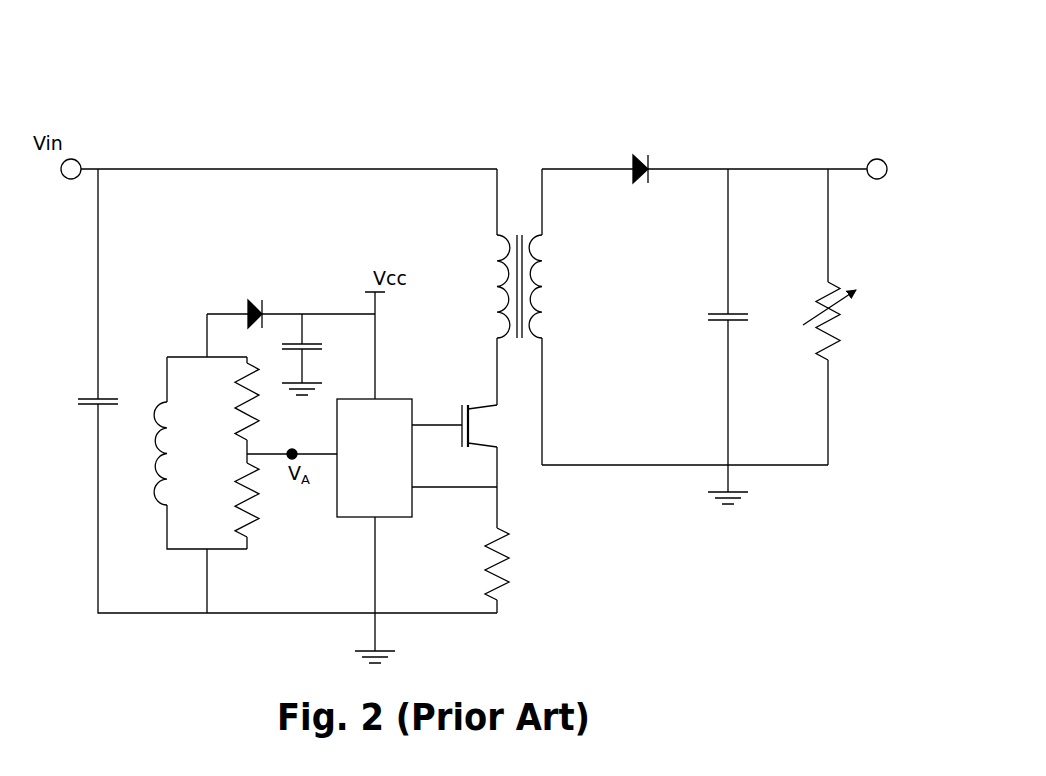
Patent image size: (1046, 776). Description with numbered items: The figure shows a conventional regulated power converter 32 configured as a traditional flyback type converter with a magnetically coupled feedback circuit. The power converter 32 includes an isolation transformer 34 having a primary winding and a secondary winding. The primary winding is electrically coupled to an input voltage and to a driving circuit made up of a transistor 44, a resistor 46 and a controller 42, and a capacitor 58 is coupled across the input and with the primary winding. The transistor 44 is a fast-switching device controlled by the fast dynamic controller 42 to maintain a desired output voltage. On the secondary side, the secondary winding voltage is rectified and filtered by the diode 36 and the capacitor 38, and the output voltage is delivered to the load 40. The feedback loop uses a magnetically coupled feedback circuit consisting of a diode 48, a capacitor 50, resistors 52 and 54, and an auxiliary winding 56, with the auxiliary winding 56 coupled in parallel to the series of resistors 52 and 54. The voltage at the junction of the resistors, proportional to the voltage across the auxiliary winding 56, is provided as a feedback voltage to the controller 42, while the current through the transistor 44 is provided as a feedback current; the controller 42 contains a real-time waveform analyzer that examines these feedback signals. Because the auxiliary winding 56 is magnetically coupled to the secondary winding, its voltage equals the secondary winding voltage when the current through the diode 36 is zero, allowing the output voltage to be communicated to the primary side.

The power converter 32 is at (688, 76).
The isolation transformer 34 is at (514, 195).
The diode 36 is at (648, 153).
The capacitor 38 is at (739, 314).
The load 40 is at (840, 316).
The controller 42 is at (394, 399).
The transistor 44 is at (462, 405).
The resistor 46 is at (481, 571).
The diode 48 is at (251, 300).
The capacitor 50 is at (318, 345).
The resistor 52 is at (259, 405).
The resistor 54 is at (259, 502).
The auxiliary winding 56 is at (151, 472).
The capacitor 58 is at (80, 398).